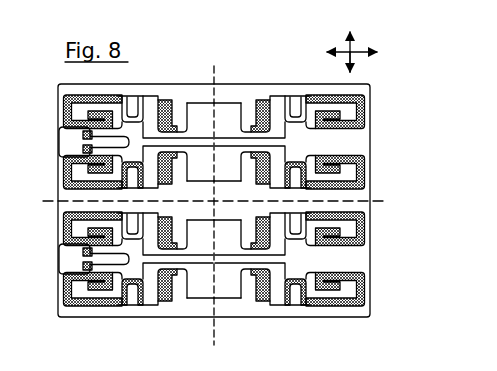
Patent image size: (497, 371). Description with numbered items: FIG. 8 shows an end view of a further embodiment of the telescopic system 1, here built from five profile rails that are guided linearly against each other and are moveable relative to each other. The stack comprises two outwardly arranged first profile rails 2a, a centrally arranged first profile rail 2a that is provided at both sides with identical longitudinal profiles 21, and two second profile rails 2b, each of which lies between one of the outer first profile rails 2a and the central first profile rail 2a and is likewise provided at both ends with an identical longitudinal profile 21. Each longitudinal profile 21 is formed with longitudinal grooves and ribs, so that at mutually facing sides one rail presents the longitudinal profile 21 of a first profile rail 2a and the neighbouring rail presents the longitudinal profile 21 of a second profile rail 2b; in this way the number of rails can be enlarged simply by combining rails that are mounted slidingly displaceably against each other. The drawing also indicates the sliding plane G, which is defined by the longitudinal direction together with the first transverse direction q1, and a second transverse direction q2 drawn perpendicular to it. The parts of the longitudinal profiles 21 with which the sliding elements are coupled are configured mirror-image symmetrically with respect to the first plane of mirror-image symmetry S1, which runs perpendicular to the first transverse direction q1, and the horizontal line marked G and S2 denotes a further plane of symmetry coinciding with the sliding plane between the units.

The telescopic system 1 is at (261, 48).
The first profile rail 2a is at (55, 88).
The second profile rail 2b is at (90, 147).
The longitudinal profile 21 is at (96, 137).
The first plane of mirror-image symmetry S1 is at (221, 195).
The second plane of symmetry S2 is at (387, 201).
The sliding plane G is at (224, 272).
The first transverse direction q1 is at (338, 54).
The second direction q2 is at (351, 39).